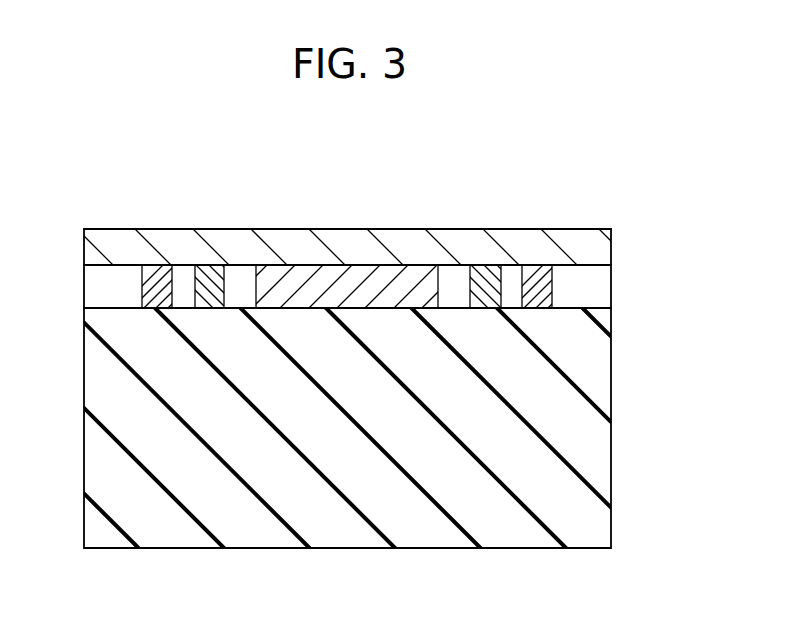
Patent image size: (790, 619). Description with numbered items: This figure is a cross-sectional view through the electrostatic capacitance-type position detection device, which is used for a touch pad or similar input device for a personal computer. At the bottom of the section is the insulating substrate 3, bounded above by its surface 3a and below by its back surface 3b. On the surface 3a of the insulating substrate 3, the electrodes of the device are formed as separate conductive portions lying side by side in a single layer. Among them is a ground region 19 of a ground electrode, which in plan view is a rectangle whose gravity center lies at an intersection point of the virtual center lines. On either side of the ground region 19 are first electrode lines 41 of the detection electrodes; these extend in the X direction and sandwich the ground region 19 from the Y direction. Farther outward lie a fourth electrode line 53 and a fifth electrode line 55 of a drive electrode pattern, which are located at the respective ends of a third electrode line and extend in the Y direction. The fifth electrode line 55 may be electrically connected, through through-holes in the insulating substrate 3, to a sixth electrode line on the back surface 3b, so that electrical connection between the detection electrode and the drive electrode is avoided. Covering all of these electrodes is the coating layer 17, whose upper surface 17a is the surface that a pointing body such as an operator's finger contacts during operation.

The insulating substrate 3 is at (103, 391).
The surface of the insulating substrate 3a is at (572, 308).
The back surface of the insulating substrate 3b is at (584, 548).
The coating layer 17 is at (357, 242).
The surface of the coating layer 17a is at (400, 228).
The ground region 19 is at (298, 280).
The first electrode line 41 is at (208, 283).
The fourth electrode line 53 is at (157, 283).
The fifth electrode line 55 is at (538, 283).